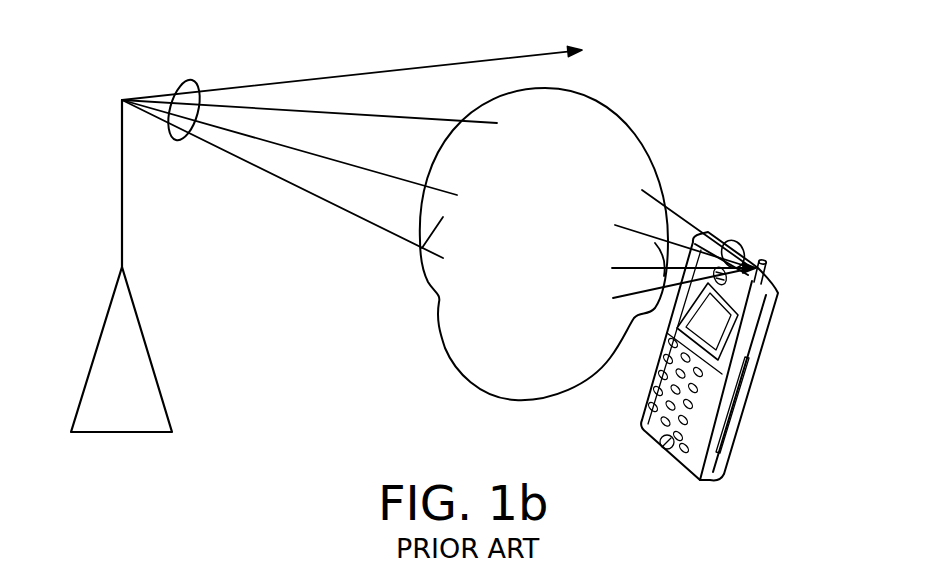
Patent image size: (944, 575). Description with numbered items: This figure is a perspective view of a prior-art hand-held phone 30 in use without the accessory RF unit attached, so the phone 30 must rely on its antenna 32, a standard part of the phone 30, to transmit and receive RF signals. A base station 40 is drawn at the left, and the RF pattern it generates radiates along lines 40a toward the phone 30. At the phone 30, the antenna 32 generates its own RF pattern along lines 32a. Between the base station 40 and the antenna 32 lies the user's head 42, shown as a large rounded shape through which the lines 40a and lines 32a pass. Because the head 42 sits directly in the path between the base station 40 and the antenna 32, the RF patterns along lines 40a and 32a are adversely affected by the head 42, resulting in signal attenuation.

The base station 40 is at (78, 340).
The lines 40a is at (191, 82).
The user's head 42 is at (478, 369).
The hand-held phone 30 is at (784, 364).
The antenna 32 is at (769, 263).
The lines 32a is at (741, 243).